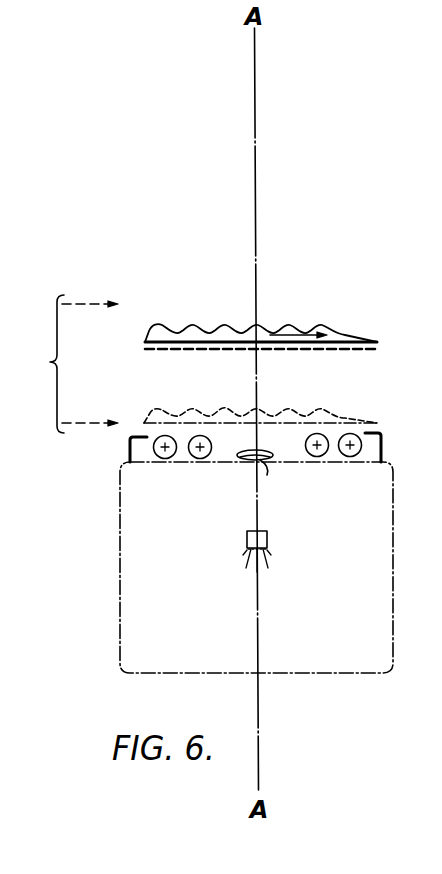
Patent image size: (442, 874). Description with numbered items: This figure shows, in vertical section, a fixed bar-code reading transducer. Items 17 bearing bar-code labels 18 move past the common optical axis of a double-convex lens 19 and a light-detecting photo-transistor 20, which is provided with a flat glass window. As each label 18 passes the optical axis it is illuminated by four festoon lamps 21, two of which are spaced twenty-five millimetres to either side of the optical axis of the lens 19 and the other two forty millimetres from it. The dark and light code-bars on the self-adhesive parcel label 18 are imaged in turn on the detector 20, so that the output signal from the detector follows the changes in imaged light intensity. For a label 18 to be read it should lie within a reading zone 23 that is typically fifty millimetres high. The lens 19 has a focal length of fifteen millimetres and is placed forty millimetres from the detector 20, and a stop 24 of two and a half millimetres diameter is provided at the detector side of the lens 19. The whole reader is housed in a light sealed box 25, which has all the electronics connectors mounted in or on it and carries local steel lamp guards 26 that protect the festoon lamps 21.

The item 17 is at (296, 333).
The bar-code label 18 is at (138, 351).
The double-convex lens 19 is at (262, 462).
The light-detecting photo-transistor 20 is at (246, 536).
The festoon lamp 21 is at (196, 456).
The reading zone 23 is at (68, 364).
The stop 24 is at (248, 465).
The light sealed box 25 is at (120, 560).
The steel lamp guard 26 is at (128, 444).